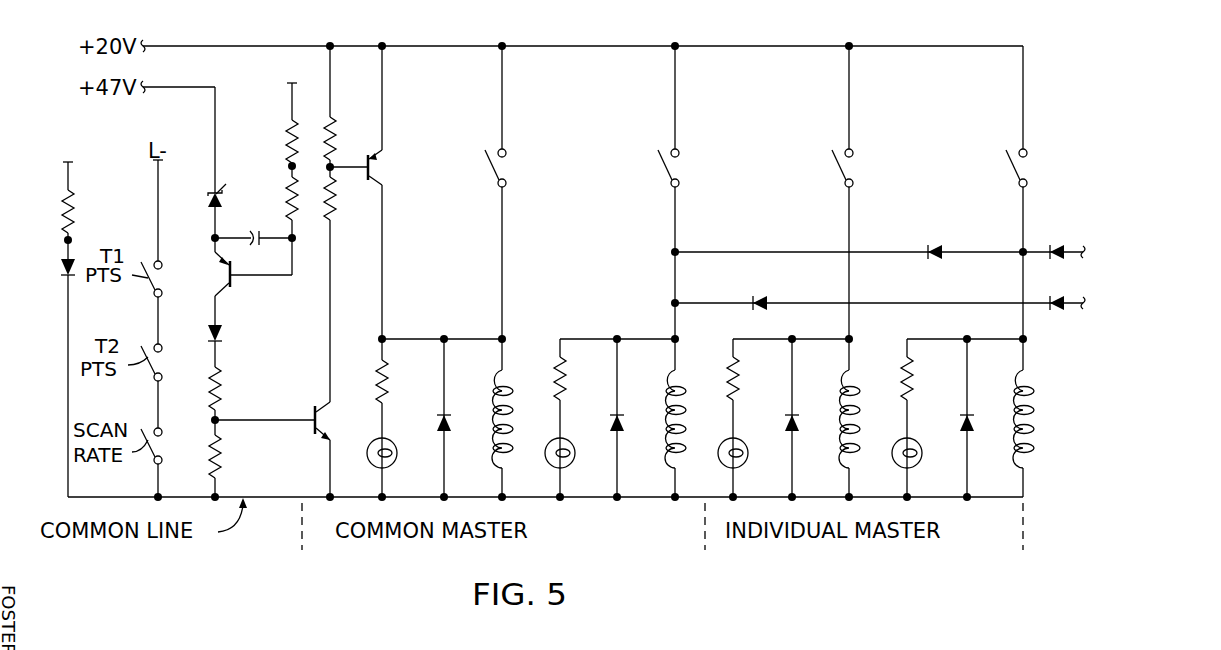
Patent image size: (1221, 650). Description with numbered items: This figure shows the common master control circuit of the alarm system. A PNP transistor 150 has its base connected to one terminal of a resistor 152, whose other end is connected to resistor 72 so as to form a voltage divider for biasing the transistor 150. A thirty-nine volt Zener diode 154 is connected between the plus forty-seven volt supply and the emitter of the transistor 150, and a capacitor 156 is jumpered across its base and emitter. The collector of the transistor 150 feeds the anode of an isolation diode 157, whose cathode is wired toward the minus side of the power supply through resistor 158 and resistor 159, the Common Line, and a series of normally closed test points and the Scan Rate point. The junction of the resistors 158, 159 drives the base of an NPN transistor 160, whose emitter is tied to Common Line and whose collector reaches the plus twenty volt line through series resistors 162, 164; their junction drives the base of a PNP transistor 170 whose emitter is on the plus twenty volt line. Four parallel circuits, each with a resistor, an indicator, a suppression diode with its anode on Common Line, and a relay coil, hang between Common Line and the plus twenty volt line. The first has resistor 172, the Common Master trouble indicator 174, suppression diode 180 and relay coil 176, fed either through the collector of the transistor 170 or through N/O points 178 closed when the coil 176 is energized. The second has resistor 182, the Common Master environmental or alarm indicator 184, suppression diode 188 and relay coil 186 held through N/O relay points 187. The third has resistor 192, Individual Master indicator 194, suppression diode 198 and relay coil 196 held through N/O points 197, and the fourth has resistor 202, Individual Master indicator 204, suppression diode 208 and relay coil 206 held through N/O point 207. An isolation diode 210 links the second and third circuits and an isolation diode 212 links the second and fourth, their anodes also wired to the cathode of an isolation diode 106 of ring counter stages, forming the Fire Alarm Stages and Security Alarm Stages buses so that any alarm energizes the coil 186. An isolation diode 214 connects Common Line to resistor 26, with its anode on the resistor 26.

The resistor 26 is at (64, 210).
The isolation diode 214 is at (62, 270).
The resistor 72 is at (290, 140).
The resistor 152 is at (290, 200).
The Zener diode 154 is at (206, 198).
The capacitor 156 is at (262, 247).
The PNP transistor 150 is at (232, 280).
The isolation diode 157 is at (223, 333).
The resistor 158 is at (221, 385).
The resistor 159 is at (221, 455).
The resistor 162 is at (334, 128).
The resistor 164 is at (334, 218).
The PNP transistor 170 is at (384, 163).
The NPN transistor 160 is at (320, 423).
The resistor 172 is at (378, 378).
The Common Master trouble indicator 174 is at (389, 467).
The relay coil 176 is at (505, 382).
The N/O points 178 is at (493, 178).
The suppression diode 180 is at (448, 440).
The resistor 182 is at (556, 400).
The Common Master environmental or alarm indicator 184 is at (566, 468).
The relay coil 186 is at (678, 382).
The N/O relay points 187 is at (665, 176).
The suppression diode 188 is at (621, 442).
The resistor 192 is at (730, 398).
The Individual Master indicator 194 is at (739, 468).
The relay coil 196 is at (852, 382).
The N/O points 197 is at (840, 176).
The suppression diode 198 is at (798, 432).
The resistor 202 is at (911, 388).
The Individual Master indicator 204 is at (912, 468).
The relay coil 206 is at (1033, 458).
The N/O point 207 is at (1009, 176).
The suppression diode 208 is at (972, 414).
The isolation diode 210 is at (765, 310).
The isolation diode 212 is at (932, 262).
The isolation diode 106 is at (1048, 244).